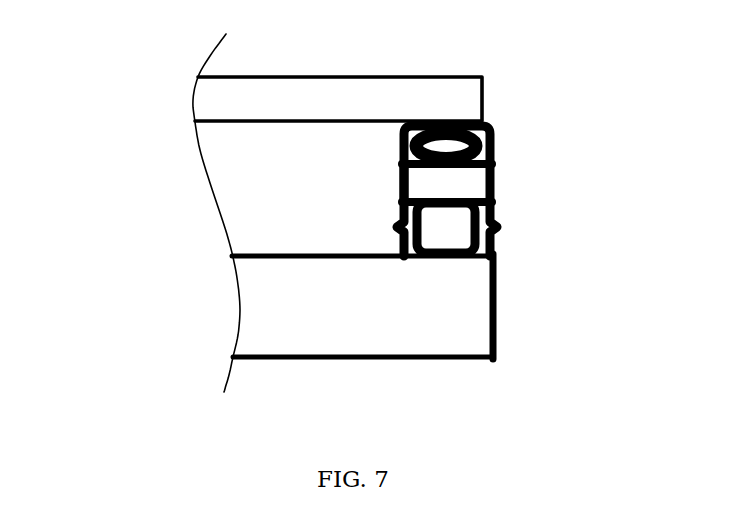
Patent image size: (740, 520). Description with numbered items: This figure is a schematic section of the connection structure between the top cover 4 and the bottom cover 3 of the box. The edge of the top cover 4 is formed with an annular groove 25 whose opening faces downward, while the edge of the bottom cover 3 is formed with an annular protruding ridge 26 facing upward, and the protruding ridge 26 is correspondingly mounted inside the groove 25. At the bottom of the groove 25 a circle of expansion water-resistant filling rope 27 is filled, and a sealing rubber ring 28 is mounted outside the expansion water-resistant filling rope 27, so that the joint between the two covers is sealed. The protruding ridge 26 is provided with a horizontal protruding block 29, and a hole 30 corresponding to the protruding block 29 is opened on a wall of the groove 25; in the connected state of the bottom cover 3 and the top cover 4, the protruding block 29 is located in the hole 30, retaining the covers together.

The bottom cover 3 is at (457, 342).
The top cover 4 is at (455, 88).
The groove of an edge of a top cover 25 is at (493, 160).
The protruding ridge of an edge of a bottom cover 26 is at (498, 250).
The expansion water-resistant filling rope 27 is at (410, 146).
The sealing rubber ring 28 is at (406, 183).
The protruding block 29 is at (495, 226).
The hole corresponding to a protruding block 30 is at (398, 225).